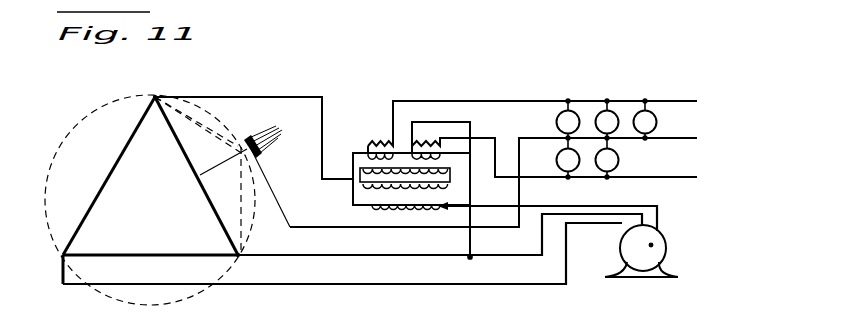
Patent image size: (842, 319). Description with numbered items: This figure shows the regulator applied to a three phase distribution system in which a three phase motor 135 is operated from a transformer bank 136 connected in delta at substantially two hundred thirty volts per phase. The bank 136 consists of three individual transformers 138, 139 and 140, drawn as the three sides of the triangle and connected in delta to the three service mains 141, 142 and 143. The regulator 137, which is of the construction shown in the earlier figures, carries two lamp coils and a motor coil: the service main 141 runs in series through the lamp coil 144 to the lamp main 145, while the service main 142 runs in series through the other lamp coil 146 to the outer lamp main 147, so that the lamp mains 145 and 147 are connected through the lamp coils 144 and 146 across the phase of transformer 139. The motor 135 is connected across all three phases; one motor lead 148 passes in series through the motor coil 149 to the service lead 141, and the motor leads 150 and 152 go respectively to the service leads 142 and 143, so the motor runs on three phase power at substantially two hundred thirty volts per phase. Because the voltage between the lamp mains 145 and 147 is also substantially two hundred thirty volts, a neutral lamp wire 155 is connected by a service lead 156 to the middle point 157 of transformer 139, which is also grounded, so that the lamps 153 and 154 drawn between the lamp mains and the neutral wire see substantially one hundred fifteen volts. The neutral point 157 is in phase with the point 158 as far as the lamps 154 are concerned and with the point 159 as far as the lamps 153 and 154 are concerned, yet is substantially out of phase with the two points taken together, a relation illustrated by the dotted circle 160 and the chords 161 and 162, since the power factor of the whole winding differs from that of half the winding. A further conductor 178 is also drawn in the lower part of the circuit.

The three phase motor 135 is at (651, 245).
The transformer bank 136 is at (132, 148).
The regulator 137 is at (381, 131).
The transformer 138 is at (130, 222).
The transformer 139 is at (206, 197).
The transformer 140 is at (200, 250).
The service main 141 is at (305, 73).
The service main 142 is at (337, 257).
The service main 143 is at (315, 285).
The lamp coil 144 is at (368, 160).
The lamp main 145 is at (500, 101).
The lamp coil 146 is at (443, 162).
The outer lamp main 147 is at (680, 178).
The motor lead 148 is at (612, 190).
The motor coil 149 is at (423, 216).
The motor lead 150 is at (618, 213).
The motor lead 152 is at (613, 224).
The lamps 153 is at (607, 121).
The lamps 154 is at (612, 160).
The neutral lamp wire 155 is at (690, 139).
The service lead 156 is at (339, 212).
The middle point 157 is at (250, 150).
The point 158 is at (246, 253).
The point 159 is at (180, 78).
The dotted circle 160 is at (100, 290).
The chord 161 is at (266, 180).
The chord 162 is at (199, 121).
The conductor 178 is at (481, 303).